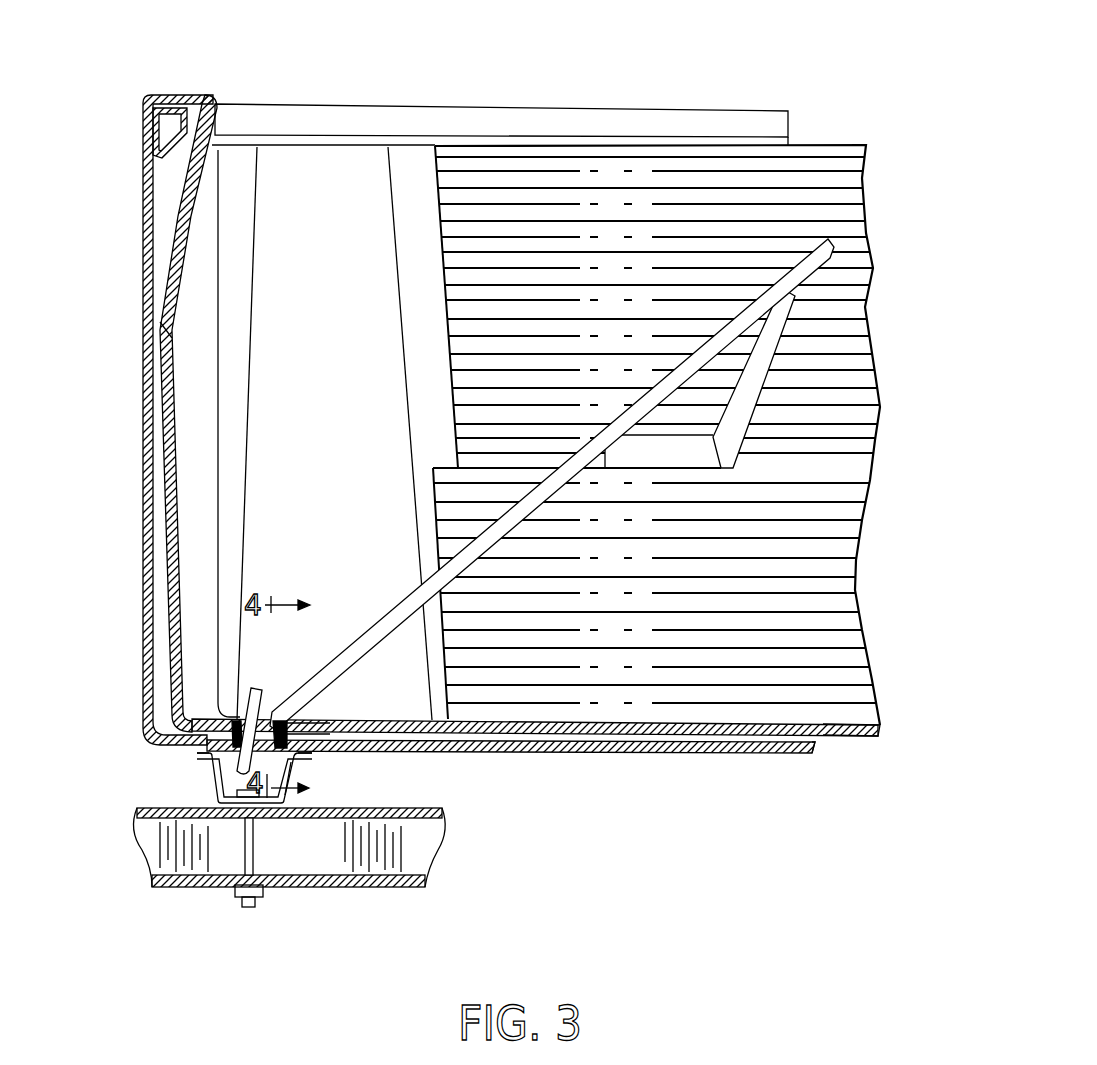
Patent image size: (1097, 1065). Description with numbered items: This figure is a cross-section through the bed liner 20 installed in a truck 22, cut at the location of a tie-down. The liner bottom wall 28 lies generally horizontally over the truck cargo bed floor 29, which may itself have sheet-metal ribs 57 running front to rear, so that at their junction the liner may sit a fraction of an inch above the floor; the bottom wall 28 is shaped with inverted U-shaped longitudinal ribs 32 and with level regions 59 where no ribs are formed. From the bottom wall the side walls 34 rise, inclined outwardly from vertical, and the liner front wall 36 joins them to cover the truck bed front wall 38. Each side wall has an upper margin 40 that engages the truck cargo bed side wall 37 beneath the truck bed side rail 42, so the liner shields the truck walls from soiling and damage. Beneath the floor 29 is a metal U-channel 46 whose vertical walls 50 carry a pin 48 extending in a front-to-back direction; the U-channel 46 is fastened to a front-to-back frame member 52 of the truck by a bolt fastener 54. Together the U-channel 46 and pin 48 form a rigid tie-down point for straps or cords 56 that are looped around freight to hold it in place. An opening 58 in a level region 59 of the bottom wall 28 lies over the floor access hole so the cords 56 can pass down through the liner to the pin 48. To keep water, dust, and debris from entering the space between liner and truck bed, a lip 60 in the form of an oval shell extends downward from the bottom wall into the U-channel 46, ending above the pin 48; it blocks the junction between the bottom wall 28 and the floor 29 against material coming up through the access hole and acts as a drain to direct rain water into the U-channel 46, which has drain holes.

The bed liner 20 is at (586, 82).
The truck 22 is at (150, 248).
The bottom wall 28 is at (823, 723).
The truck cargo bed floor 29 is at (792, 757).
The longitudinal ribs 32 is at (343, 718).
The side walls 34 is at (337, 211).
The liner front wall 36 is at (172, 345).
The truck cargo bed side walls 37 is at (790, 130).
The truck bed front wall 38 is at (143, 640).
The upper margin 40 is at (852, 145).
The truck bed side rail 42 is at (720, 112).
The U-channel 46 is at (313, 783).
The pin 48 is at (290, 778).
The vertical walls 50 is at (212, 772).
The frame member 52 is at (310, 888).
The bolt fastener 54 is at (256, 850).
The straps or cords 56 is at (365, 603).
The ribs 57 is at (818, 745).
The openings 58 is at (240, 725).
The level regions 59 is at (312, 720).
The lip 60 is at (250, 727).